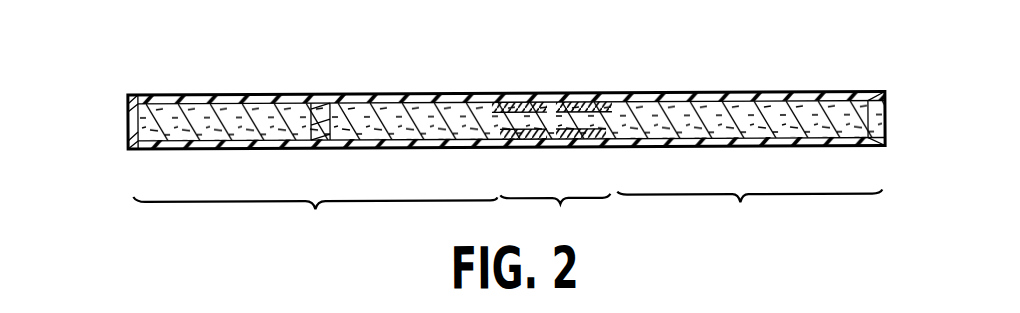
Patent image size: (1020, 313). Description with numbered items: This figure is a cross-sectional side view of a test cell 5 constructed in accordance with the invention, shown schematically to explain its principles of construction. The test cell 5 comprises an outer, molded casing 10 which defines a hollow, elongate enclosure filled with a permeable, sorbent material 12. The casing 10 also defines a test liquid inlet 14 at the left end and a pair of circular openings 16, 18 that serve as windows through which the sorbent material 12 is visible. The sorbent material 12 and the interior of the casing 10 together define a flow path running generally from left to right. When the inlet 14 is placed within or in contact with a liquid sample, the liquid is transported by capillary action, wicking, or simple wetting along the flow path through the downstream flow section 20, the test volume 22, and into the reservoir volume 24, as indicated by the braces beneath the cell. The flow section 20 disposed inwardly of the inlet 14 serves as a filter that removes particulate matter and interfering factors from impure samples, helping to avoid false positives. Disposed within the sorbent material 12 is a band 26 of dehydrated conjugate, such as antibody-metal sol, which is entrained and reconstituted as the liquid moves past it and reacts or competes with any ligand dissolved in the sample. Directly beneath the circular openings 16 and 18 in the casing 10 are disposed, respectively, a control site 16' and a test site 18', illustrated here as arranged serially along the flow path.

The test cell 5 is at (835, 58).
The casing 10 is at (240, 96).
The sorbent material 12 is at (687, 143).
The test liquid inlet 14 is at (134, 123).
The circular opening 16 is at (505, 83).
The circular opening 18 is at (587, 82).
The control site 16' is at (517, 154).
The test site 18' is at (579, 154).
The flow section 20 is at (315, 218).
The test volume 22 is at (555, 216).
The reservoir volume 24 is at (749, 213).
The band of dehydrated conjugate 26 is at (319, 112).